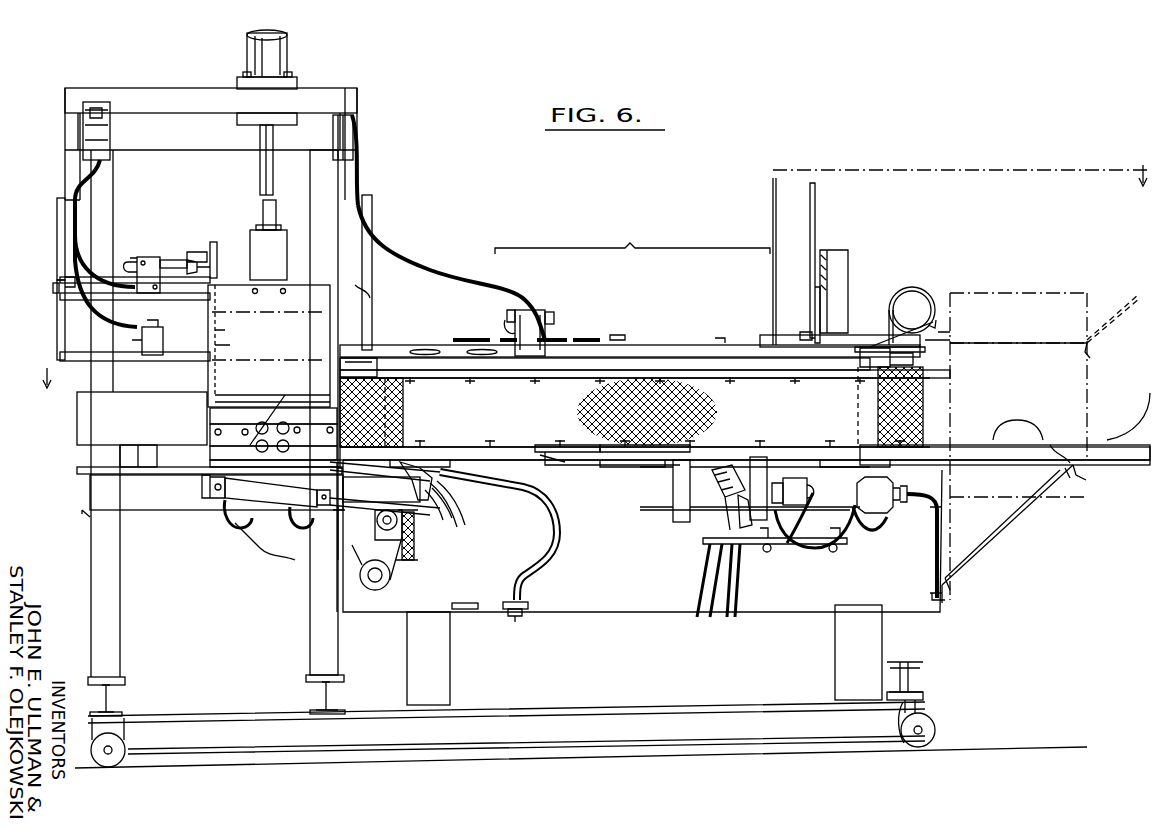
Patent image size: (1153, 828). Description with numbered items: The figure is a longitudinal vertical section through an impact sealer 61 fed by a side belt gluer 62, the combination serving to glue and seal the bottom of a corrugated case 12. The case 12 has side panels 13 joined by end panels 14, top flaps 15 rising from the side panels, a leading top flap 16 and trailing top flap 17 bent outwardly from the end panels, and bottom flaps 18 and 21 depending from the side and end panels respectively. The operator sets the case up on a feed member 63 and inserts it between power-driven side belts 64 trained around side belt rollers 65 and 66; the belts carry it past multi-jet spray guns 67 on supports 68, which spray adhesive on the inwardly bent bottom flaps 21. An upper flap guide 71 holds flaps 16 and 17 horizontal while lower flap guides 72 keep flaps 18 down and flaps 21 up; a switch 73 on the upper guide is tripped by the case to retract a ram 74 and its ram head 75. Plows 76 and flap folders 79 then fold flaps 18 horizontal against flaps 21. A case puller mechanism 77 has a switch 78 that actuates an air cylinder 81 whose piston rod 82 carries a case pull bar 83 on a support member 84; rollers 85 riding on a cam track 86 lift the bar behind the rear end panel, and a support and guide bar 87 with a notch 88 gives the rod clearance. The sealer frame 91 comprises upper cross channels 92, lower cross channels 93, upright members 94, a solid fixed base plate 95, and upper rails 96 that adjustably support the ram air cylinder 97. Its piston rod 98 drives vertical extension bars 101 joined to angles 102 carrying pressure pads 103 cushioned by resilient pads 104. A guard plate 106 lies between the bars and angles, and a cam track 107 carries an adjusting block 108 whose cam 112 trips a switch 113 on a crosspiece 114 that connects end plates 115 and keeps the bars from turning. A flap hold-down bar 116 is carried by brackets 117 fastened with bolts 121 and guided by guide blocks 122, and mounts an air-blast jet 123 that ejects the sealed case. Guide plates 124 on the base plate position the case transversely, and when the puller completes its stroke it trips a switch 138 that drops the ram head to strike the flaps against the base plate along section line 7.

The section line 7- 7 is at (595, 288).
The case 12 is at (1086, 396).
The side panels 13 is at (1033, 388).
The end panels 14 is at (1101, 357).
The top flaps 15 is at (1018, 305).
The leading top flap 16 is at (937, 343).
The trailing top flap 17 is at (1120, 322).
The bottom flaps 18 is at (1050, 490).
The bottom flaps 21 is at (1071, 416).
The impact sealer 61 is at (370, 108).
The side belt gluer 62 is at (632, 237).
The feed member 63 is at (1085, 478).
The side belts 64 is at (640, 380).
The side belt roller 65 is at (375, 350).
The side belt roller 66 is at (868, 345).
The multi-jet spray guns 67 is at (750, 480).
The supports 68 is at (755, 544).
The upper flap guide 71 is at (793, 335).
The lower flap guides 72 is at (610, 470).
The switch 73 is at (540, 312).
The ram 74 is at (235, 200).
The ram head 75 is at (276, 407).
The plows 76 is at (566, 473).
The case puller mechanism 77 is at (265, 548).
The switch 78 is at (418, 452).
The flap folders 79 is at (503, 493).
The air cylinder 81 is at (272, 495).
The piston rod 82 is at (378, 537).
The case pull bar 83 is at (456, 504).
The support member 84 is at (430, 520).
The rollers 85 is at (453, 518).
The cam track 86 is at (385, 488).
The support and guide bar 87 is at (418, 548).
The notch 88 is at (395, 570).
The frame 91 is at (154, 96).
The upper cross channels 92 is at (70, 130).
The lower cross channels 93 is at (92, 498).
The upright members 94 is at (98, 590).
The base plate 95 is at (102, 470).
The upper rails 96 is at (205, 96).
The air cylinder 97 is at (285, 48).
The piston rod 98 is at (274, 162).
The vertical extension bars 101 is at (255, 248).
The angles 102 is at (210, 425).
The pressure pads 103 is at (210, 460).
The resilient pads 104 is at (212, 442).
The guard plate 106 is at (290, 345).
The cam track 107 is at (225, 377).
The adjusting block 108 is at (217, 256).
The cam 112 is at (192, 255).
The switch 113 is at (149, 257).
The crosspiece 114 is at (92, 296).
The end plates 115 is at (66, 163).
The flap hold-down bar 116 is at (126, 361).
The brackets 117 is at (56, 238).
The bolts 121 is at (52, 285).
The guide blocks 122 is at (60, 292).
The air-blast jet 123 is at (157, 335).
The guide plates 124 is at (84, 424).
The switch 138 is at (338, 543).